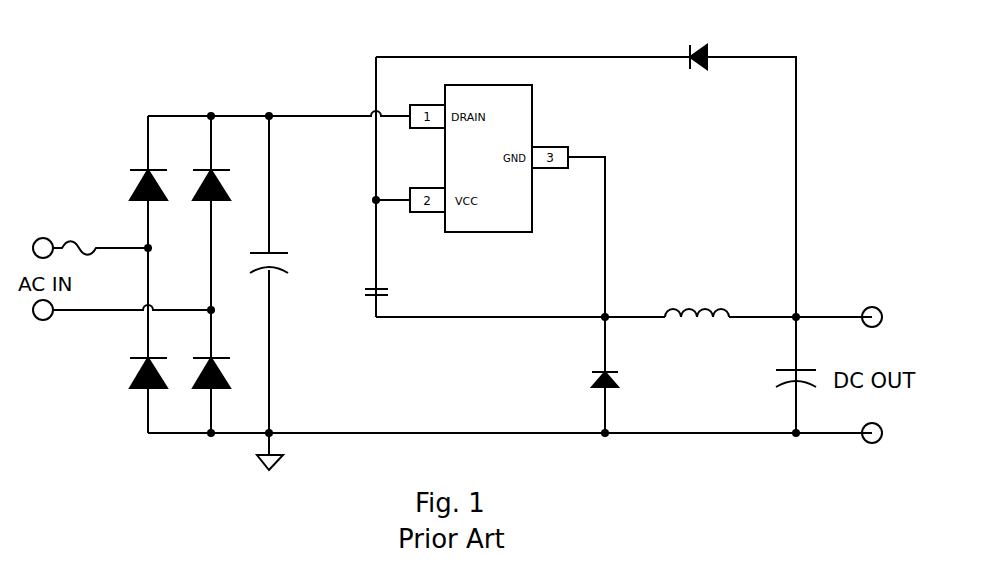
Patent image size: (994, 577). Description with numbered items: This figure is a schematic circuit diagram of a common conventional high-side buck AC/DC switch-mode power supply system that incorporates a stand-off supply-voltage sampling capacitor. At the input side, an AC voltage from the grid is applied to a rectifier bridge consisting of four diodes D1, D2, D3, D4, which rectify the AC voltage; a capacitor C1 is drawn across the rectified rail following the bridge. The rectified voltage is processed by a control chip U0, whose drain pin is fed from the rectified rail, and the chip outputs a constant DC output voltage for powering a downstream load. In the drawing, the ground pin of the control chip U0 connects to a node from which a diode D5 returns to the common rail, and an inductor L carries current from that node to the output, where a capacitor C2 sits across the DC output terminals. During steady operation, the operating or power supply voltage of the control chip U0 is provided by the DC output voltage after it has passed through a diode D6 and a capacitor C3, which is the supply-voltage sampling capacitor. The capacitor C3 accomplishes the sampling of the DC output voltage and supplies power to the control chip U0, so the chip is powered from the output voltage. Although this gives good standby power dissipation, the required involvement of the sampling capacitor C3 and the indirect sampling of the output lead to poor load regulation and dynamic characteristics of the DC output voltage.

The diode D1 is at (129, 184).
The diode D2 is at (131, 373).
The diode D3 is at (226, 185).
The diode D4 is at (228, 373).
The freewheeling diode D5 is at (583, 376).
The diode D6 is at (694, 72).
The input filter capacitor C1 is at (284, 265).
The output capacitor C2 is at (779, 382).
The VCC-sampling capacitor C3 is at (395, 292).
The inductor L is at (697, 299).
The control chip U0 is at (488, 175).